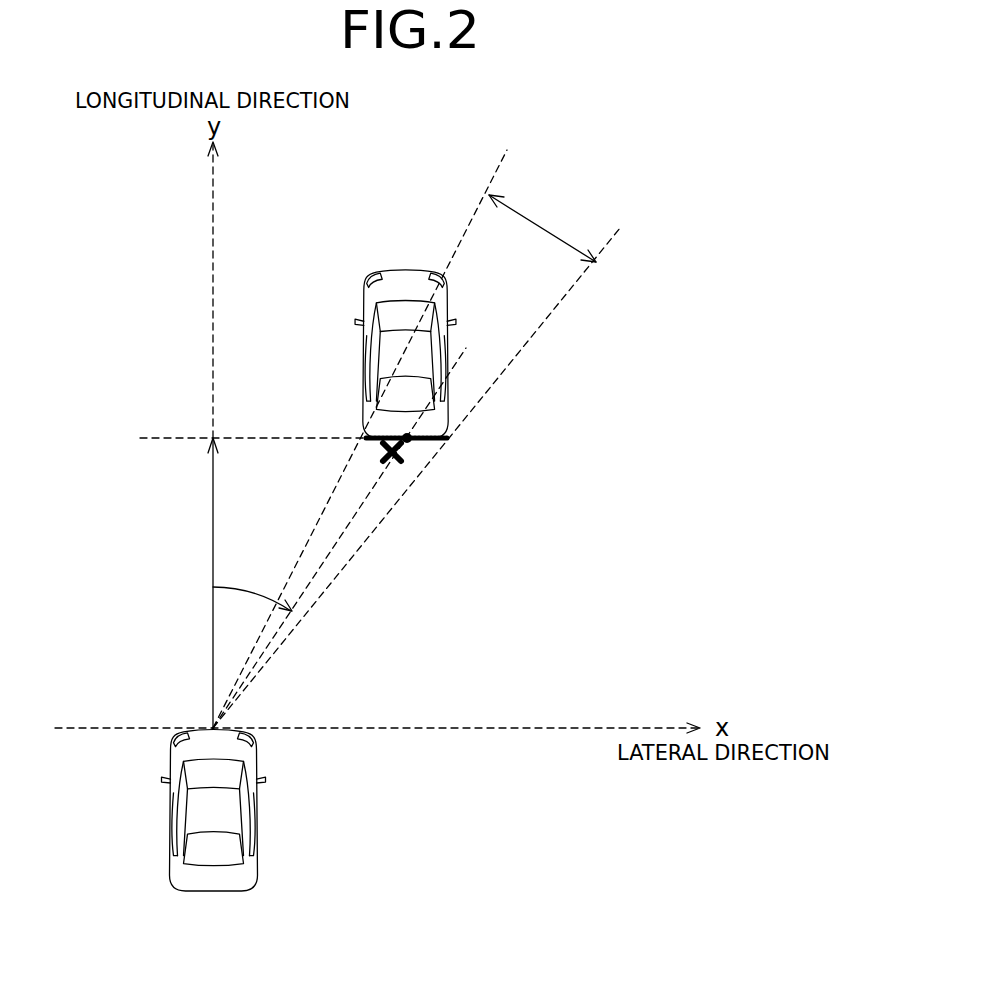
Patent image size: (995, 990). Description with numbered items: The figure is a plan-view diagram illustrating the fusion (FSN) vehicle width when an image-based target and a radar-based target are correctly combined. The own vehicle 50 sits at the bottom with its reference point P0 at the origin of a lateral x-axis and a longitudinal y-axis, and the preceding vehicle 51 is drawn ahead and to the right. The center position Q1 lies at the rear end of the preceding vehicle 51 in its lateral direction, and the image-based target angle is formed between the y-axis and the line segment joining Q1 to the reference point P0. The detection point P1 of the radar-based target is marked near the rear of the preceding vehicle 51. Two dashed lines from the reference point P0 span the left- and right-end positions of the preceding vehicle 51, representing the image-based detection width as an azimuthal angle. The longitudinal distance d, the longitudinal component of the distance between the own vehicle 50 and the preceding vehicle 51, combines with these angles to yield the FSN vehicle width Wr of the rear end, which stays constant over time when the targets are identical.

The own vehicle 50 is at (258, 873).
The preceding vehicle 51 is at (452, 402).
The reference point P0 is at (192, 711).
The detection point of radar-based target P1 is at (394, 463).
The center position Q1 is at (412, 446).
The FSN vehicle width Wr is at (434, 444).
The longitudinal distance d is at (237, 439).